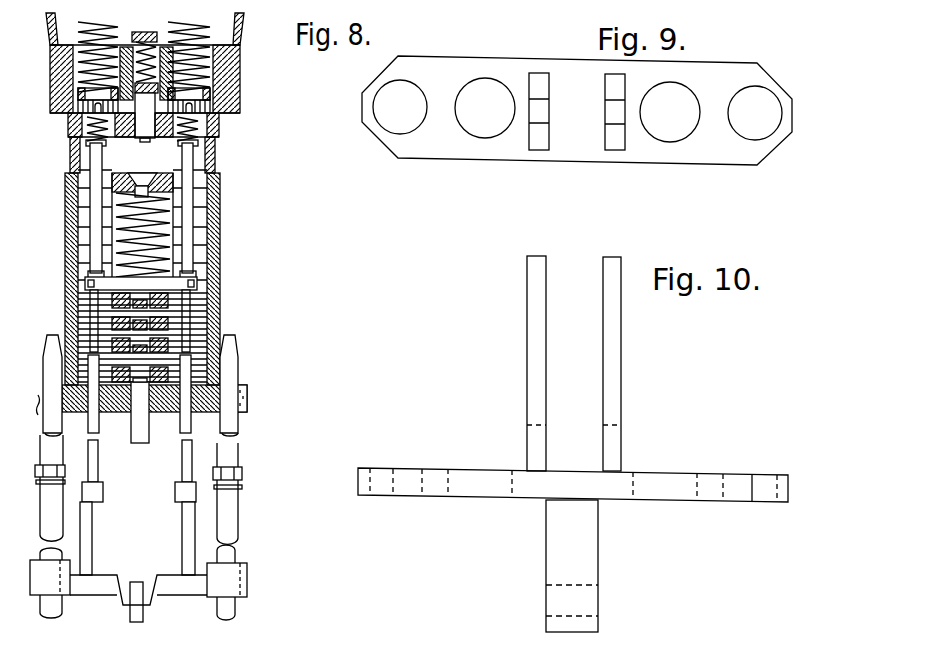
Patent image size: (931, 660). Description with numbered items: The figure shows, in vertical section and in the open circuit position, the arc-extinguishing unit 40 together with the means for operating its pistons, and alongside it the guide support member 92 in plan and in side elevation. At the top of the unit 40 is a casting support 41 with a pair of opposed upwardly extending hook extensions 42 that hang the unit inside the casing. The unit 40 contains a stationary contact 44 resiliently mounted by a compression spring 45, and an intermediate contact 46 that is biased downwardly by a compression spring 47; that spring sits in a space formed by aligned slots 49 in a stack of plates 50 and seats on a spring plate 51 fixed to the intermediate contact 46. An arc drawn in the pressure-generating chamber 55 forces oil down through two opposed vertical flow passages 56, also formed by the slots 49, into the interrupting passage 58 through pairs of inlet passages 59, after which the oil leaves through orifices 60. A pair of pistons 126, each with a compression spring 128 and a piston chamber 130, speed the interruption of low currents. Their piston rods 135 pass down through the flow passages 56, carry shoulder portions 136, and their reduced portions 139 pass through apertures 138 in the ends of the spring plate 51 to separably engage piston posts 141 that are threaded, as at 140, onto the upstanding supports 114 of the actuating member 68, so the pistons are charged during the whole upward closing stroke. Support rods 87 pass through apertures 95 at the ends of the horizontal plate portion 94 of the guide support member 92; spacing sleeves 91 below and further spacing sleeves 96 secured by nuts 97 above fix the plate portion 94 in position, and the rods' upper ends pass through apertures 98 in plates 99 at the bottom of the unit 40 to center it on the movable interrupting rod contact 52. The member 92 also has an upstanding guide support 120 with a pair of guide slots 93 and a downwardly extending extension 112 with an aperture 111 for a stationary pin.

In FIG. 8, the arc-extinguishing unit 40 is at (53, 253).
In FIG. 8, the casting support 41 is at (240, 70).
In FIG. 8, the hook extensions 42 is at (47, 27).
In FIG. 8, the stationary contact 44 is at (142, 140).
In FIG. 8, the compression spring 45 is at (160, 45).
In FIG. 8, the intermediate contact 46 is at (143, 188).
In FIG. 8, the compression spring 47 is at (168, 227).
In FIG. 8, the slots 49 is at (207, 245).
In FIG. 8, the plates 50 is at (222, 198).
In FIG. 8, the spring plate 51 is at (197, 284).
In FIG. 8, the movable interrupting rod contact 52 is at (148, 421).
In FIG. 8, the pressure-generating chamber 55 is at (175, 160).
In FIG. 8, the vertical flow passages 56 is at (80, 203).
In FIG. 8, the interrupting passage 58 is at (182, 300).
In FIG. 8, the inlet passages 59 is at (192, 318).
In FIG. 8, the orifices 60 is at (52, 335).
In FIG. 8, the actuating member 68 is at (172, 575).
In FIG. 8, the support rods 87 is at (50, 363).
In FIG. 8, the spacing sleeves 91 is at (42, 553).
In FIG. 9, the guide support member 92 is at (733, 59).
In FIG. 10, the guide support member 92 is at (645, 378).
In FIG. 9, the guide slots 93 is at (533, 120).
In FIG. 9, the plate portion 94 is at (697, 155).
In FIG. 10, the plate portion 94 is at (670, 474).
In FIG. 9, the apertures 95 is at (417, 127).
In FIG. 10, the apertures 95 is at (370, 472).
In FIG. 8, the spacing sleeves 96 is at (40, 502).
In FIG. 8, the nuts 97 is at (37, 470).
In FIG. 8, the apertures 98 is at (247, 392).
In FIG. 8, the plates 99 is at (40, 398).
In FIG. 10, the aperture 111 is at (575, 587).
In FIG. 10, the downwardly extending extension 112 is at (598, 550).
In FIG. 8, the upstanding supports 114 is at (182, 527).
In FIG. 10, the upstanding guide support 120 is at (621, 338).
In FIG. 8, the pistons 126 is at (78, 108).
In FIG. 8, the compression spring 128 is at (78, 53).
In FIG. 8, the piston chambers 130 is at (80, 92).
In FIG. 8, the piston rods 135 is at (90, 148).
In FIG. 8, the shoulder portions 136 is at (193, 277).
In FIG. 8, the apertures 138 is at (90, 300).
In FIG. 8, the reduced portions 139 is at (93, 318).
In FIG. 8, the threaded connection 140 is at (175, 492).
In FIG. 8, the piston posts 141 is at (182, 462).